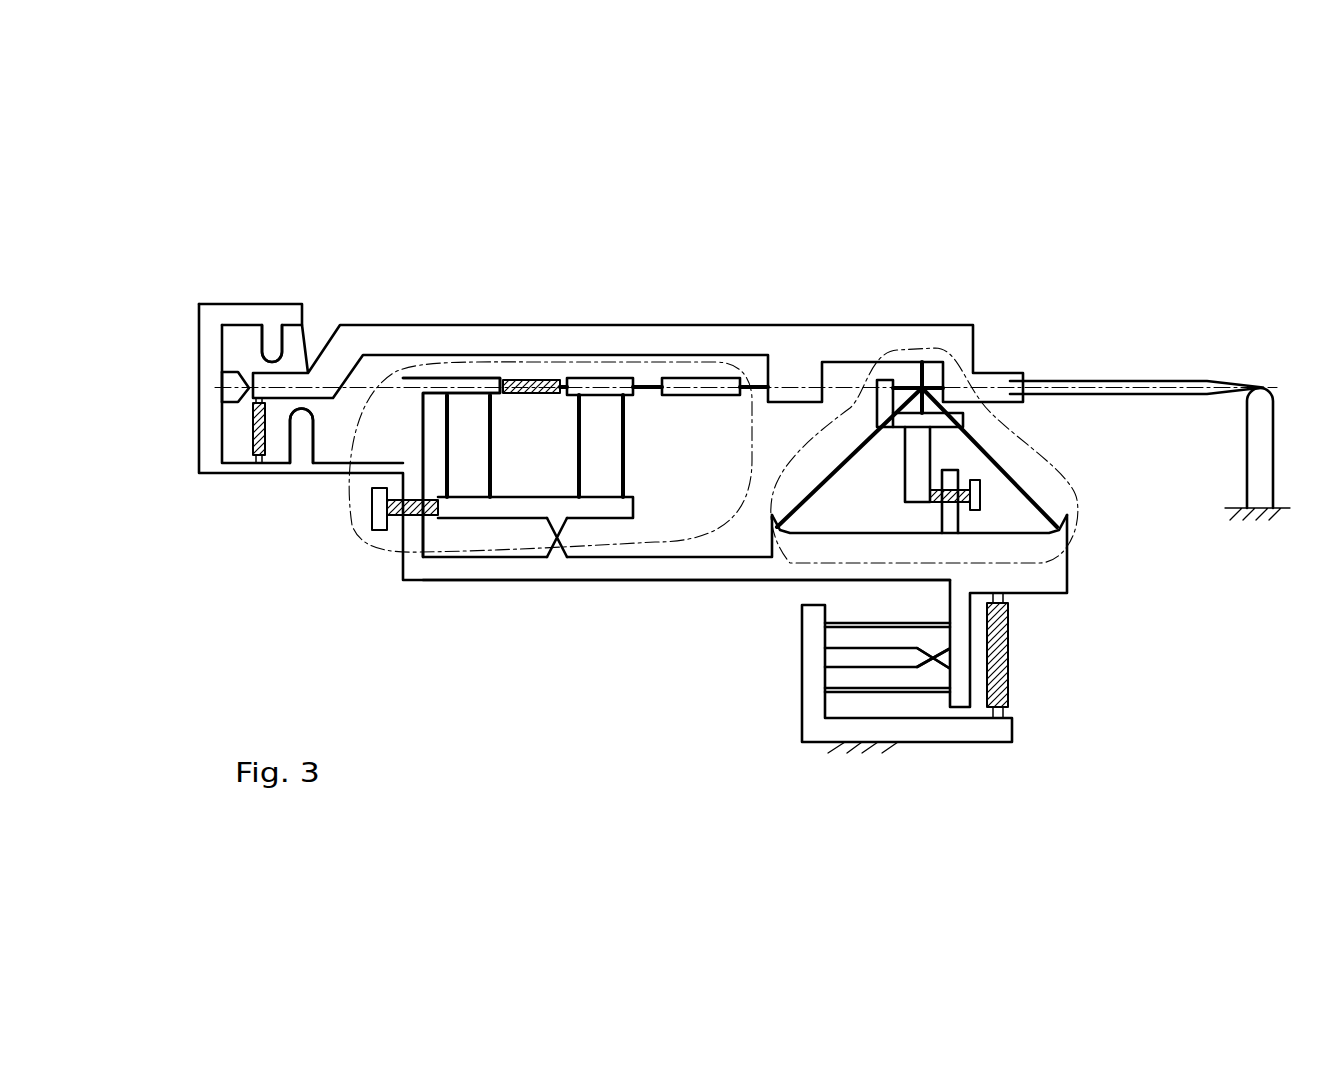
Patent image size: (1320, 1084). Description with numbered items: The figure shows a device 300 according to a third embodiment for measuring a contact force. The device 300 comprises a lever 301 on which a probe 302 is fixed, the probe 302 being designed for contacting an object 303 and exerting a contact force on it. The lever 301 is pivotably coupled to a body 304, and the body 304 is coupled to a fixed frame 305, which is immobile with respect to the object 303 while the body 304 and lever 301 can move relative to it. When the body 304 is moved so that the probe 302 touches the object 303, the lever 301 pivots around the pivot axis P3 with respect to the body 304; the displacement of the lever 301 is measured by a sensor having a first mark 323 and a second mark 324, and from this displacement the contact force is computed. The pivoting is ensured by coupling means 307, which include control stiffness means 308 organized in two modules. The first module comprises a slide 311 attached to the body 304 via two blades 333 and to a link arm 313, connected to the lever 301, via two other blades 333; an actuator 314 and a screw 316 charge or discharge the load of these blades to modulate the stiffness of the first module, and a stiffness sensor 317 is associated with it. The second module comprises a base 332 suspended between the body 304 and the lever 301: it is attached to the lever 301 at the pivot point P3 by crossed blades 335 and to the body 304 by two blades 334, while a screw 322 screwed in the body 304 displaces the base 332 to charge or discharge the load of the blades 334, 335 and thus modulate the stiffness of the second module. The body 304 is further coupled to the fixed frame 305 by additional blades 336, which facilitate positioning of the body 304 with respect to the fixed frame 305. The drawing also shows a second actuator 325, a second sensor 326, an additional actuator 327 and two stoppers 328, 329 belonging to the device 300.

The device 300 is at (1128, 226).
The lever 301 is at (793, 360).
The probe 302 is at (1175, 383).
The object 303 is at (1260, 473).
The body 304 is at (720, 567).
The fixed frame 305 is at (865, 758).
The coupling means 307 is at (387, 552).
The control stiffness means 308 is at (345, 513).
The slide of the first module 311 is at (483, 507).
The link arm of the first module 313 is at (603, 388).
The actuator of the first module 314 is at (530, 380).
The screw of the first module 316 is at (378, 520).
The stiffness sensor of the first module 317 is at (543, 533).
The screw of the second module 322 is at (980, 497).
The first mark of the sensor 323 is at (238, 373).
The second mark of the sensor 324 is at (240, 402).
The second actuator 325 is at (1000, 675).
The second sensor 326 is at (927, 663).
The additional actuator 327 is at (258, 435).
The stopper 328 is at (272, 348).
The stopper 329 is at (303, 422).
The base of the second module 332 is at (923, 457).
The blade of the first module 333 is at (490, 430).
The blades of the second module 334 is at (860, 437).
The crossed blades of the second module 335 is at (922, 388).
The additional blades 336 is at (845, 692).
The pivot axis P3 is at (922, 388).